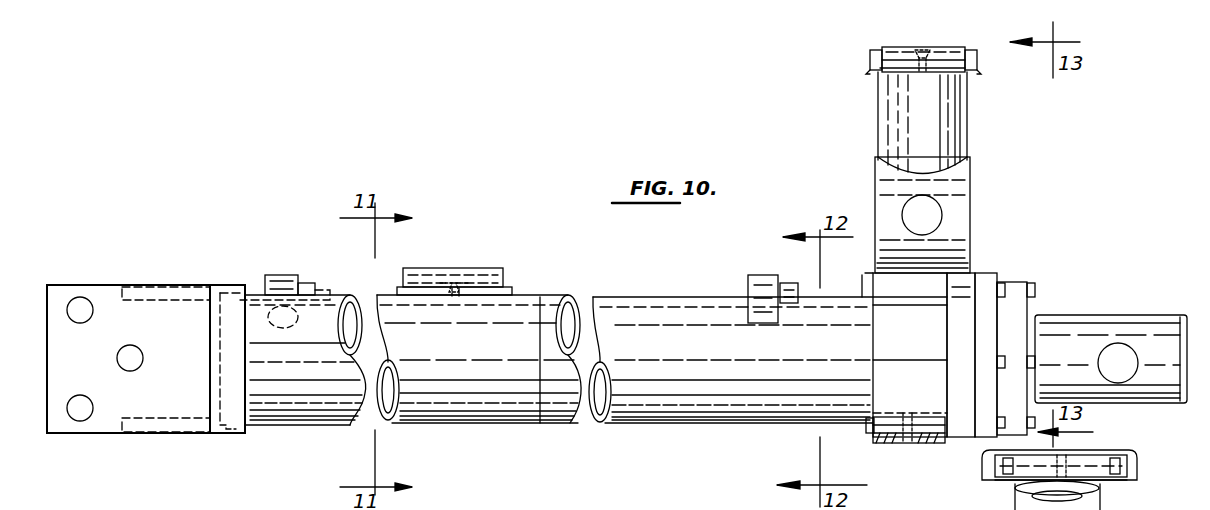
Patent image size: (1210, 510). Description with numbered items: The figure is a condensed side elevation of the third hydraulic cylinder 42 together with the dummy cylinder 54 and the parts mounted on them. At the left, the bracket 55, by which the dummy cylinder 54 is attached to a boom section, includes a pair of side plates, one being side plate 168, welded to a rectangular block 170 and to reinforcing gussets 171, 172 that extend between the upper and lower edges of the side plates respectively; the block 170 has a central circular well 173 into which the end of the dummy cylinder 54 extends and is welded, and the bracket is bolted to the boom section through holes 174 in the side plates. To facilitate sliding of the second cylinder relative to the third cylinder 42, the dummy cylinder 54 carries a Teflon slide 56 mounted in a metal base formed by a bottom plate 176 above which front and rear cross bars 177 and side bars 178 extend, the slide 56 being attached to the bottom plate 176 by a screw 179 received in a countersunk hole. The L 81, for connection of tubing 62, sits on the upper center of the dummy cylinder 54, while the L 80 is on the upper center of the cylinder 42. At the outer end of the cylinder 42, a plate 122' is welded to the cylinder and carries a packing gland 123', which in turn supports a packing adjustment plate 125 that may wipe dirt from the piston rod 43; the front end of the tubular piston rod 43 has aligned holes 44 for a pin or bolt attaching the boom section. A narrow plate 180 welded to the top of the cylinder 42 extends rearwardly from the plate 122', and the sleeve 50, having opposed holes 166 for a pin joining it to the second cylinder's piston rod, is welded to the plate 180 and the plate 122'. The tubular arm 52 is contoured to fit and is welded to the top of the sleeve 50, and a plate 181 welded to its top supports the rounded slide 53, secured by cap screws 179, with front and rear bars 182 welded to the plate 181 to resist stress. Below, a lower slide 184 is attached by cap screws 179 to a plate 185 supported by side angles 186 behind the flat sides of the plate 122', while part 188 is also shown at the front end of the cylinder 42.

The third cylinder 42 is at (567, 420).
The piston rod 43 is at (1120, 323).
The aligned holes 44 is at (1118, 363).
The sleeve 50 is at (970, 189).
The arm 52 is at (967, 138).
The slide 53 is at (880, 47).
The dummy cylinder 54 is at (453, 407).
The bracket 55 is at (72, 285).
The slide 56 is at (490, 268).
The tubing 62 is at (318, 287).
The L 80 is at (757, 283).
The L 81 is at (284, 275).
The plate 122' is at (984, 332).
The packing gland 123' is at (1018, 340).
The packing adjustment plate 125 is at (1023, 308).
The holes 166 is at (922, 215).
The side plate 168 is at (108, 297).
The block 170 is at (227, 285).
The reinforcing gusset 171 is at (173, 288).
The reinforcing gusset 172 is at (128, 435).
The central circular well 173 is at (223, 437).
The holes 174 is at (93, 308).
The bottom plate 176 is at (513, 280).
The cross bars 177 is at (398, 295).
The side bars 178 is at (478, 292).
The screw 179 is at (445, 272).
The narrow plate 180 is at (864, 292).
The plate 181 is at (893, 68).
The bars 182 is at (870, 60).
The lower slide 184 is at (930, 443).
The plate 185 is at (883, 432).
The side angles 186 is at (883, 367).
The bracket 188 is at (872, 430).